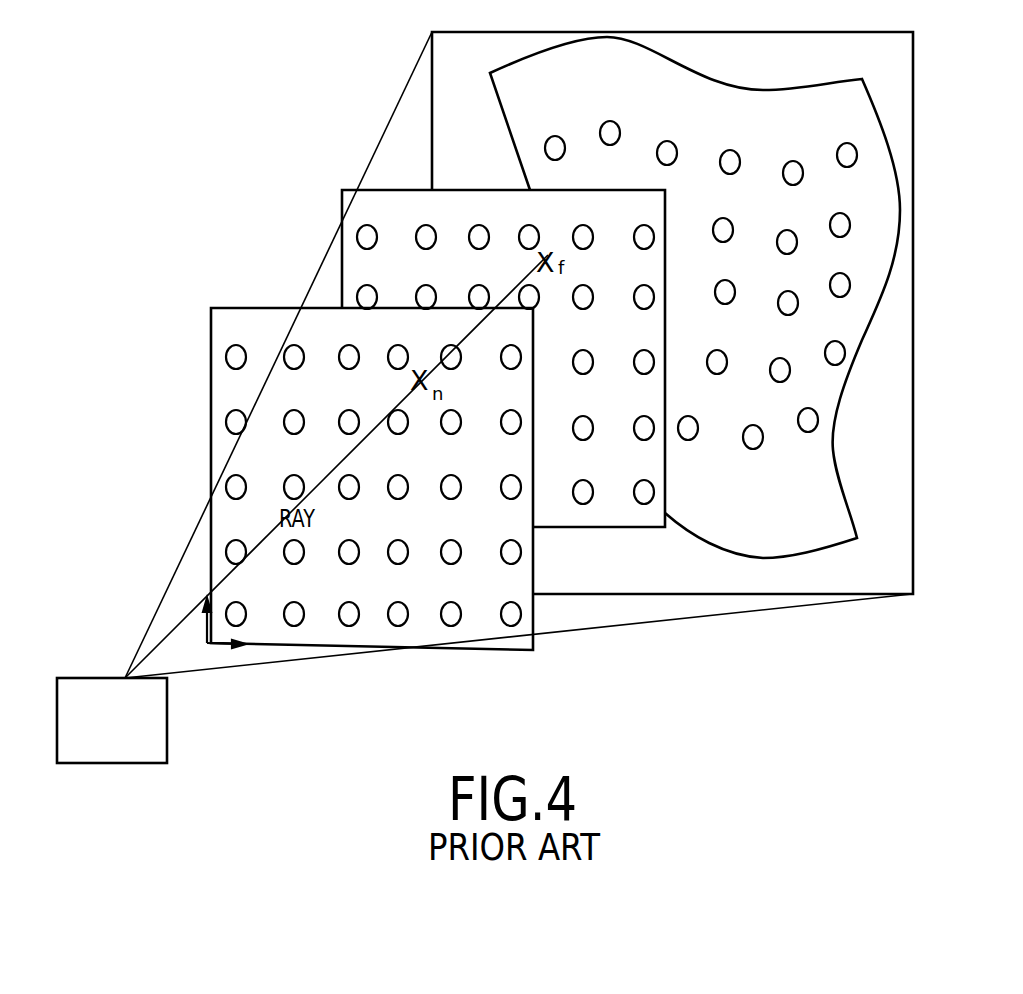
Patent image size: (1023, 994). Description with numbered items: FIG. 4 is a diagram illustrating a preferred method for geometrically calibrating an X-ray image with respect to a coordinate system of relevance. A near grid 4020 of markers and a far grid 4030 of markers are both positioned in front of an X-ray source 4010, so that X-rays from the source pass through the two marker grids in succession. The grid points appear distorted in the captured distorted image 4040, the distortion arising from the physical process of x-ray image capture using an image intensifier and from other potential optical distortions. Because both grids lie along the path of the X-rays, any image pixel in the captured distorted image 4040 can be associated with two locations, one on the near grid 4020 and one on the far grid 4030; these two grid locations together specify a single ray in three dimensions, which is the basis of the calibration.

The X-ray source 4010 is at (93, 678).
The near grid of markers 4020 is at (533, 650).
The far grid of markers 4030 is at (653, 527).
The captured distorted image 4040 is at (878, 322).